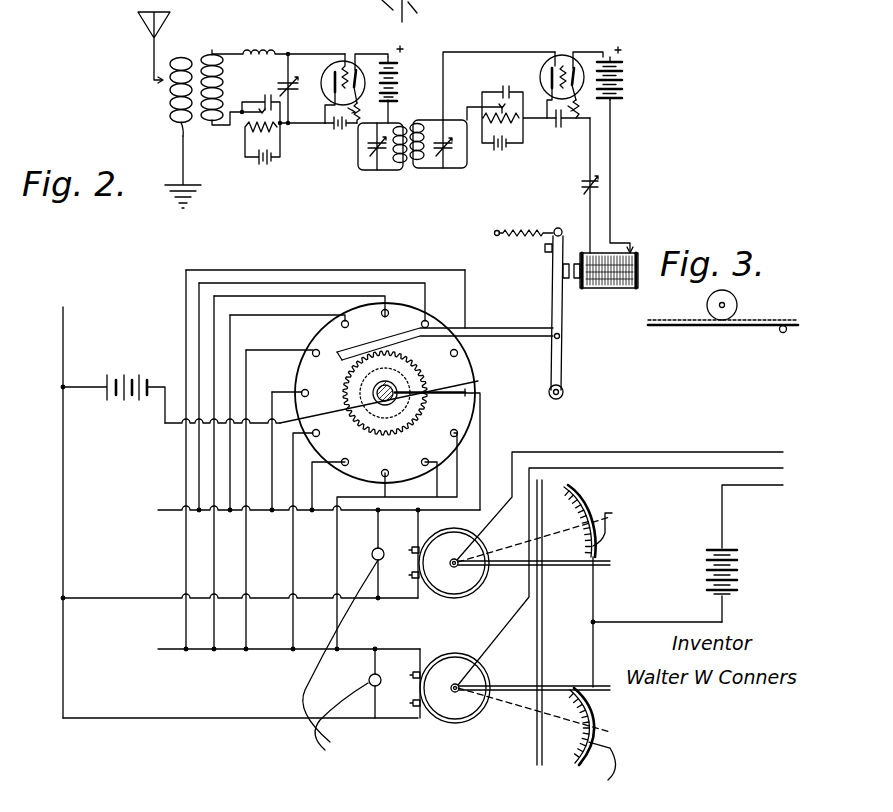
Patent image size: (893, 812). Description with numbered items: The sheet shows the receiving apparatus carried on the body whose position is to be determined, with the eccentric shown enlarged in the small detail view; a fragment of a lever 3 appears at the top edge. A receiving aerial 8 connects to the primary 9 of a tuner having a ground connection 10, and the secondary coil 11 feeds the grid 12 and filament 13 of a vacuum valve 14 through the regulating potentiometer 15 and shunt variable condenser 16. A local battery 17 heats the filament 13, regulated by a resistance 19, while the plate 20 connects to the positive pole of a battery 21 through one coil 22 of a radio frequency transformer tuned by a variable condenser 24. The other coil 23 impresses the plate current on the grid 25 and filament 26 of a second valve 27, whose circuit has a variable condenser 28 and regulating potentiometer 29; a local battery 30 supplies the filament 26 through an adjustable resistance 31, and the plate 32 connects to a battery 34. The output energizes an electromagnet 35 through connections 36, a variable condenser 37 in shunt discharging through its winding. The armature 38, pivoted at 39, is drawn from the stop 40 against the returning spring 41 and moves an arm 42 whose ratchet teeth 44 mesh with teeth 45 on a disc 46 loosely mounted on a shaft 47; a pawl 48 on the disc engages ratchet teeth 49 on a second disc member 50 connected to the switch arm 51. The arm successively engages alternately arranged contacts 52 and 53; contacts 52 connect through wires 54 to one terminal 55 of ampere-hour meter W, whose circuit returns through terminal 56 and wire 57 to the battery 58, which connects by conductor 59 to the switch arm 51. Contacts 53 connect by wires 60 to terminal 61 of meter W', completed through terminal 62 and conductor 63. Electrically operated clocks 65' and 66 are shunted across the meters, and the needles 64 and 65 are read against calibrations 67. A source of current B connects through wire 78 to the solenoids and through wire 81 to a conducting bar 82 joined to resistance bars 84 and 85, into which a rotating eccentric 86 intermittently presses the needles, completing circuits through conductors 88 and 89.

In FIG. 2, the lever 3 is at (400, 18).
In FIG. 2, the receiving aerial 8 is at (137, 18).
In FIG. 2, the primary 9 is at (170, 100).
In FIG. 2, the ground connection 10 is at (199, 187).
In FIG. 2, the secondary coil 11 is at (212, 53).
In FIG. 2, the grid 12 is at (345, 64).
In FIG. 2, the filament 13 is at (335, 72).
In FIG. 2, the vacuum valve 14 is at (372, 95).
In FIG. 2, the regulating potentiometer 15 is at (281, 141).
In FIG. 2, the shunt variable condenser 16 is at (292, 91).
In FIG. 2, the local battery 17 is at (338, 128).
In FIG. 2, the resistance 19 is at (361, 112).
In FIG. 2, the plate 20 is at (361, 69).
In FIG. 2, the battery 21 is at (398, 84).
In FIG. 2, the coil 22 is at (402, 160).
In FIG. 2, the coil 23 is at (430, 168).
In FIG. 2, the variable condenser 24 is at (370, 152).
In FIG. 2, the grid 25 is at (565, 55).
In FIG. 2, the filament 26 is at (552, 73).
In FIG. 2, the second valve 27 is at (586, 104).
In FIG. 2, the variable condenser 28 is at (444, 135).
In FIG. 2, the regulating potentiometer 29 is at (520, 144).
In FIG. 2, the local battery 30 is at (567, 131).
In FIG. 2, the adjustable resistance 31 is at (612, 117).
In FIG. 2, the plate 32 is at (576, 66).
In FIG. 2, the battery 34 is at (624, 82).
In FIG. 2, the electromagnet 35 is at (609, 288).
In FIG. 2, the connections 36 is at (592, 159).
In FIG. 2, the variable condenser 37 is at (600, 189).
In FIG. 2, the armature 38 is at (562, 318).
In FIG. 2, the pivot 39 is at (564, 391).
In FIG. 2, the stop 40 is at (544, 250).
In FIG. 2, the returning spring 41 is at (520, 231).
In FIG. 2, the arm 42 is at (480, 328).
In FIG. 2, the ratchet teeth 44 is at (339, 359).
In FIG. 2, the teeth 45 is at (435, 353).
In FIG. 2, the disc 46 is at (363, 412).
In FIG. 2, the shaft 47 is at (410, 382).
In FIG. 2, the pawl 48 is at (386, 356).
In FIG. 2, the ratchet teeth 49 is at (393, 414).
In FIG. 2, the second disc member 50 is at (373, 390).
In FIG. 2, the switch arm 51 is at (443, 396).
In FIG. 2, the contacts 52 is at (388, 311).
In FIG. 2, the contacts 53 is at (469, 393).
In FIG. 2, the wires 54 is at (248, 283).
In FIG. 2, the terminal 55 is at (432, 663).
In FIG. 2, the terminal 56 is at (437, 722).
In FIG. 2, the wire 57 is at (114, 718).
In FIG. 2, the battery 58 is at (118, 376).
In FIG. 2, the conductor 59 is at (166, 426).
In FIG. 2, the wires 60 is at (313, 313).
In FIG. 2, the terminal 61 is at (412, 548).
In FIG. 2, the terminal 62 is at (432, 582).
In FIG. 2, the conductor 63 is at (115, 596).
In FIG. 2, the indicating needle 64 is at (566, 686).
In FIG. 3, the indicating needle 64 is at (698, 327).
In FIG. 2, the indicating needle 65 is at (550, 545).
In FIG. 2, the electrically operated clock 65' is at (346, 687).
In FIG. 2, the electrically operated clock 66 is at (372, 560).
In FIG. 2, the calibrations 67 is at (593, 507).
In FIG. 2, the wire 78 is at (723, 516).
In FIG. 2, the wire 81 is at (650, 623).
In FIG. 2, the conducting bar 82 is at (596, 621).
In FIG. 2, the resistance bar 84 is at (595, 705).
In FIG. 3, the resistance bar 84 is at (782, 333).
In FIG. 2, the resistance bar 85 is at (580, 482).
In FIG. 2, the rotating eccentric 86 is at (542, 648).
In FIG. 3, the rotating eccentric 86 is at (736, 303).
In FIG. 2, the conductor 88 is at (679, 468).
In FIG. 2, the conductor 89 is at (670, 447).
In FIG. 2, the source of current B is at (739, 575).
In FIG. 2, the ampere-hour meter W is at (455, 688).
In FIG. 2, the ampere-hour meter W' is at (454, 563).